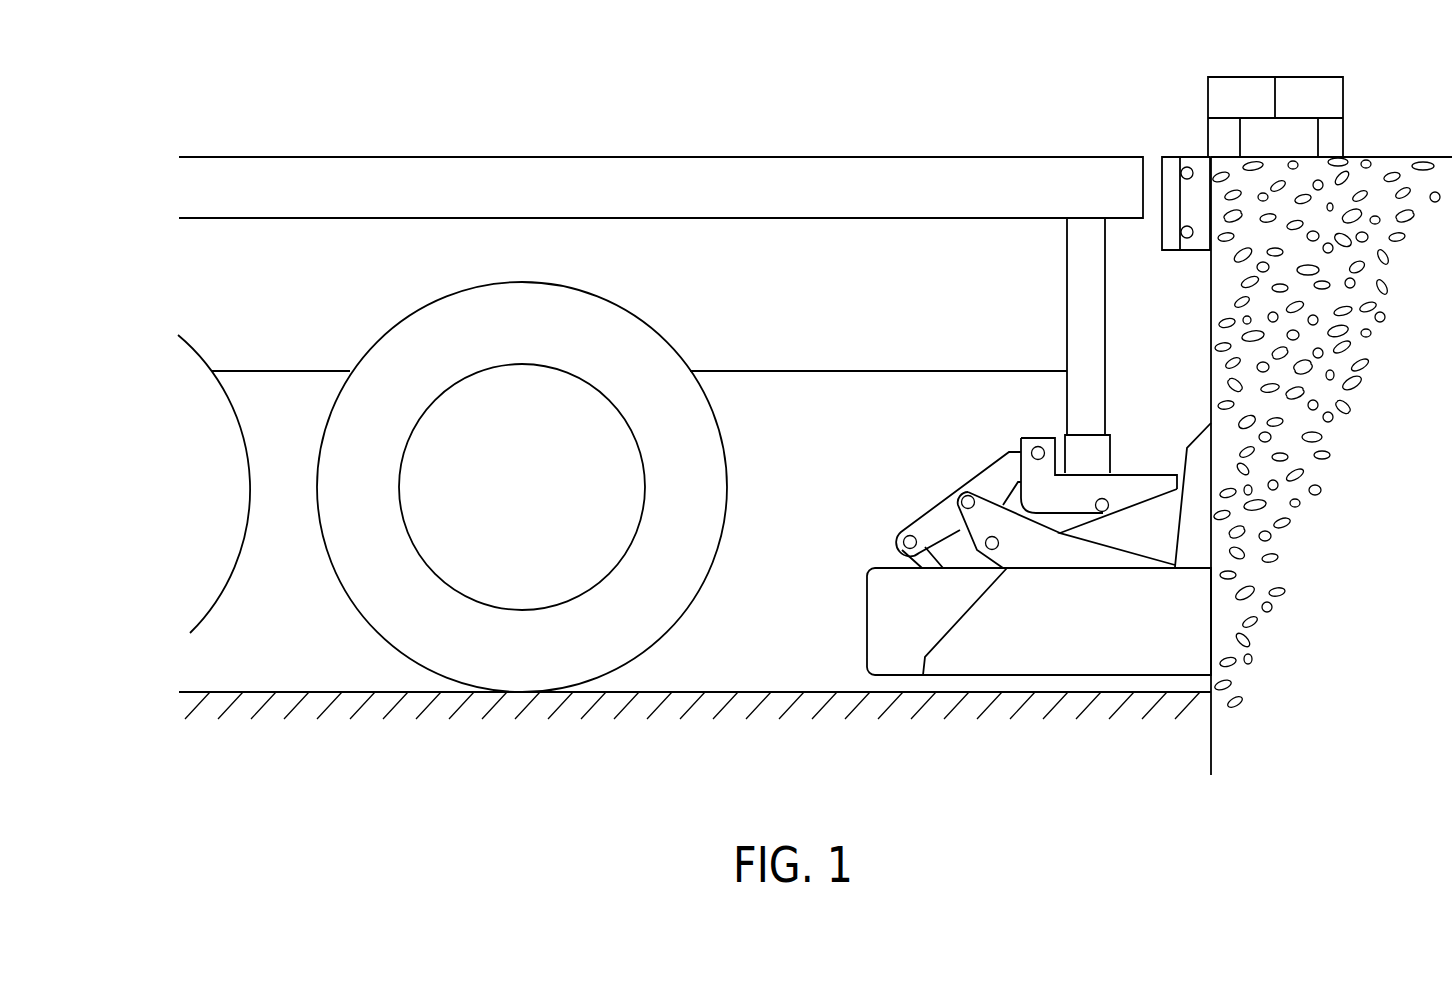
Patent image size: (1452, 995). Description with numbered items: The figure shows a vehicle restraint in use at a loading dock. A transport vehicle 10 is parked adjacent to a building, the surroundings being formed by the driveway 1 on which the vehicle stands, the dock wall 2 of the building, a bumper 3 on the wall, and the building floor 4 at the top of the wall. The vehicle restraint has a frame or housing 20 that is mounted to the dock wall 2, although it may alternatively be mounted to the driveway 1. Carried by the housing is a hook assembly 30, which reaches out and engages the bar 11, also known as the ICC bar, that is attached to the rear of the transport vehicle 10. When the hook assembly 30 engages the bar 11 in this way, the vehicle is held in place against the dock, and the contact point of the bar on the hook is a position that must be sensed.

The driveway 1 is at (742, 692).
The dock wall 2 is at (1212, 332).
The bumper 3 is at (1200, 160).
The building floor 4 is at (1407, 162).
The transport vehicle 10 is at (658, 173).
The bar 11 is at (1112, 447).
The frame or housing 20 is at (867, 610).
The hook assembly 30 is at (1040, 437).